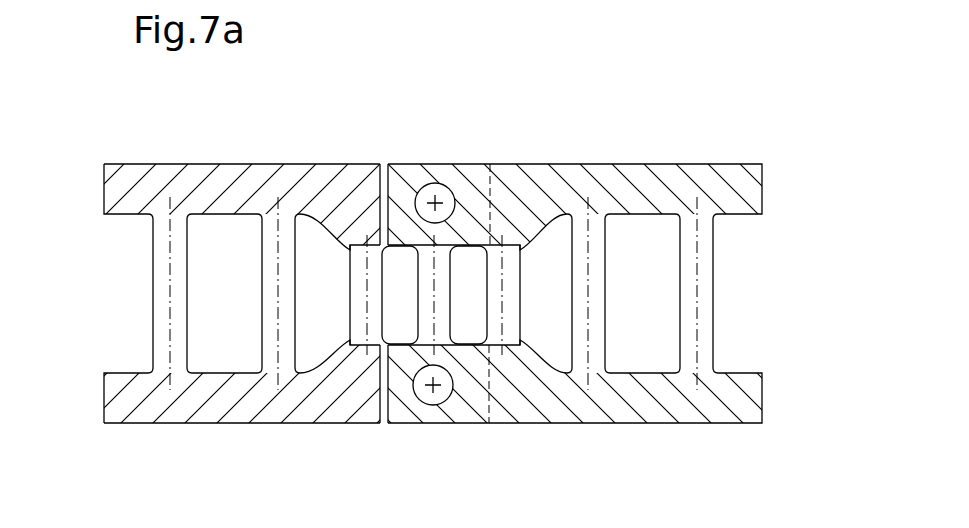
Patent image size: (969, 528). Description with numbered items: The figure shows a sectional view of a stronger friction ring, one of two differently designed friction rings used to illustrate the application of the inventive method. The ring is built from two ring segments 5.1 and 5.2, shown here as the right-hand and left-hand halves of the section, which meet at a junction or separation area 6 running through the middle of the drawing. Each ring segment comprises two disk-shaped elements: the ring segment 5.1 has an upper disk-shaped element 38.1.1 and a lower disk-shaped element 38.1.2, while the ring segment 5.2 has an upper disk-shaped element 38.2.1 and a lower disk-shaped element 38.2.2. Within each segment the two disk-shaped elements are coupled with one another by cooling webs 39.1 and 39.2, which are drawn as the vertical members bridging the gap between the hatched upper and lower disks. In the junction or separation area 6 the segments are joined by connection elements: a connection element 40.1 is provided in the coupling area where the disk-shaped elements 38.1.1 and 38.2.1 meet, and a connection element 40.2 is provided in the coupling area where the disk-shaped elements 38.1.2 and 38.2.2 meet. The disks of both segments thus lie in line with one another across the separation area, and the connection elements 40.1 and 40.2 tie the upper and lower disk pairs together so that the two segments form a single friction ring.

The ring segment 5.1 is at (615, 286).
The ring segment 5.2 is at (201, 291).
The junction or separation area 6 is at (432, 276).
The disk-shaped element 38.1.1 is at (703, 177).
The disk-shaped element 38.1.2 is at (713, 412).
The disk-shaped element 38.2.1 is at (137, 192).
The disk-shaped element 38.2.2 is at (137, 408).
The cooling web 39.1 is at (703, 328).
The cooling web 39.2 is at (163, 308).
The connection element 40.1 is at (423, 187).
The connection element 40.2 is at (442, 400).